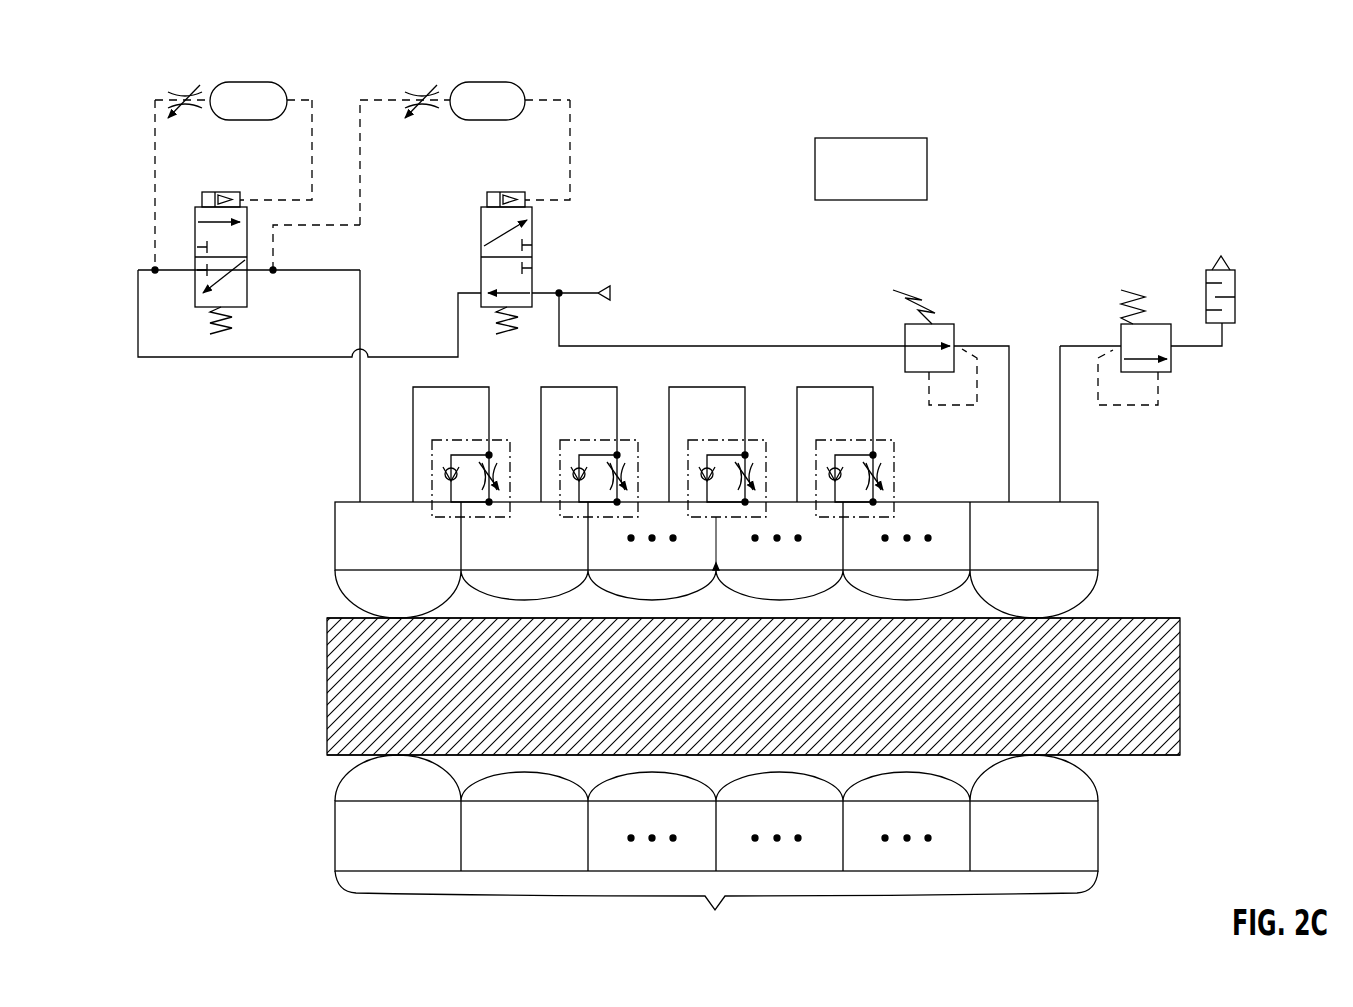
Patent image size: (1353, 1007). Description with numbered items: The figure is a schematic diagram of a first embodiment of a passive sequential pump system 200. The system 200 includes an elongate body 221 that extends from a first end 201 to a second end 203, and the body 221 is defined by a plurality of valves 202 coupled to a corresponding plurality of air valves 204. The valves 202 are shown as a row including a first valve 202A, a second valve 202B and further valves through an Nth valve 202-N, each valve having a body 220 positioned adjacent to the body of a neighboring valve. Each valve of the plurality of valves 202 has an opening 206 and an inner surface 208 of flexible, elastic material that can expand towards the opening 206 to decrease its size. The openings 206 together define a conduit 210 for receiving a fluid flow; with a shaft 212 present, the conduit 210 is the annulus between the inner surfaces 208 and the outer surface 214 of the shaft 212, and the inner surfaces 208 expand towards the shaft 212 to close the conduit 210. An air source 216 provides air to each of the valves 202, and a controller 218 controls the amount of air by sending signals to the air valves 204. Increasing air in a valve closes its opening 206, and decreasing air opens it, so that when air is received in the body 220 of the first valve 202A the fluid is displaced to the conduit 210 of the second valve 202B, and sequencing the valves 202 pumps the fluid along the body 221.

The passive sequential pump system 200 is at (1192, 63).
The first end 201 is at (327, 590).
The plurality of valves 202 is at (716, 908).
The first valve 202A is at (427, 555).
The second valve 202B is at (554, 555).
The Nth bladder segment 202-N is at (1080, 541).
The second end 203 is at (1108, 578).
The plurality of air valves 204 is at (487, 440).
The opening 206 is at (1108, 610).
The inner surface 208 is at (347, 618).
The conduit 210 is at (735, 611).
The shaft 212 is at (327, 720).
The outer surface 214 is at (338, 757).
The air source 216 is at (266, 82).
The controller 218 is at (892, 186).
The body 220 is at (1092, 818).
The elongate body 221 is at (337, 878).